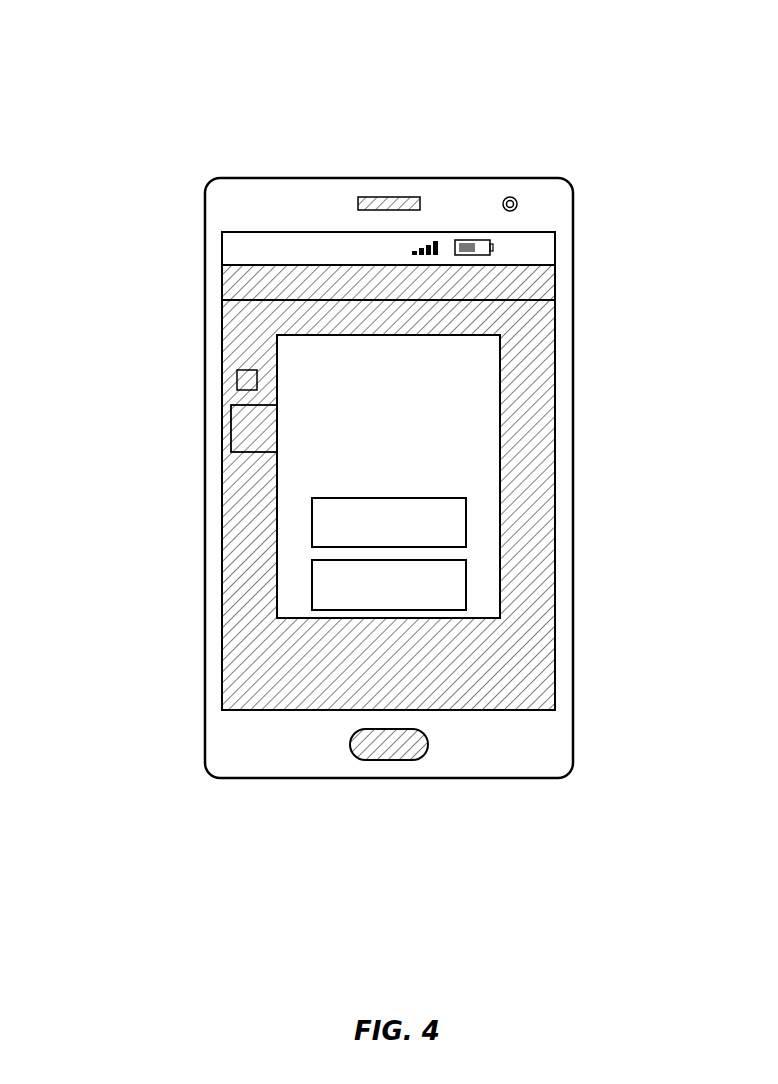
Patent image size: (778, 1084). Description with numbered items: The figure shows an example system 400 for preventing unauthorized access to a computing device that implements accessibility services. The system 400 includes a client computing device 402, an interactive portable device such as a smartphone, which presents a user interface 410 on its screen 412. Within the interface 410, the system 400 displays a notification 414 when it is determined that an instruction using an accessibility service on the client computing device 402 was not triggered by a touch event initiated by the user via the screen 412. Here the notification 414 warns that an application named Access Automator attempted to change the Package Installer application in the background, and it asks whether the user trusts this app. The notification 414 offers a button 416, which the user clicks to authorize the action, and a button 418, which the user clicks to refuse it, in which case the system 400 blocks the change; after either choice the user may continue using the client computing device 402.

The example system 400 is at (90, 68).
The client computing device 402 is at (404, 436).
The user interface 410 is at (178, 708).
The screen 412 is at (404, 451).
The notification 414 is at (503, 457).
The button 416 is at (504, 473).
The button 418 is at (504, 540).